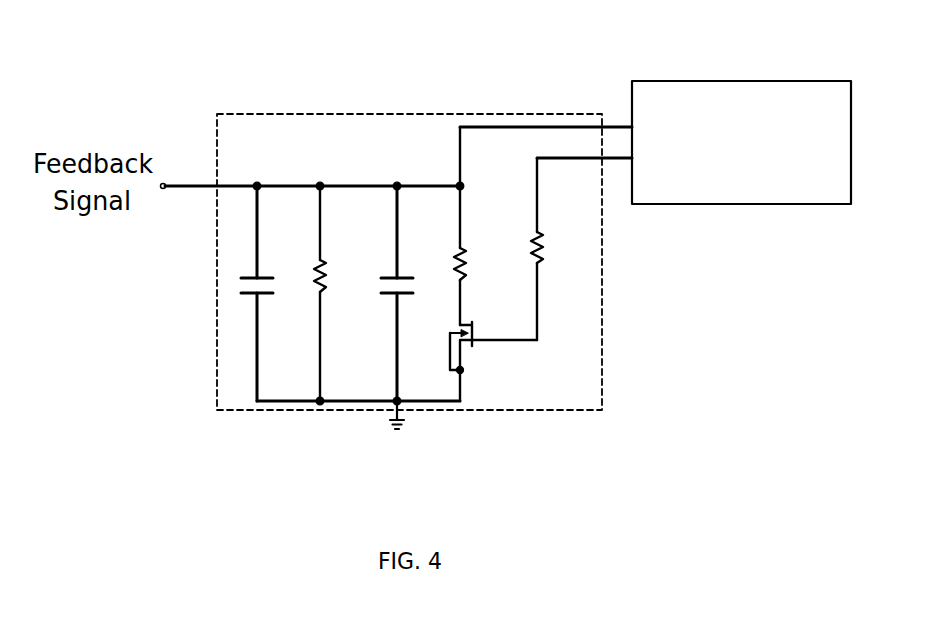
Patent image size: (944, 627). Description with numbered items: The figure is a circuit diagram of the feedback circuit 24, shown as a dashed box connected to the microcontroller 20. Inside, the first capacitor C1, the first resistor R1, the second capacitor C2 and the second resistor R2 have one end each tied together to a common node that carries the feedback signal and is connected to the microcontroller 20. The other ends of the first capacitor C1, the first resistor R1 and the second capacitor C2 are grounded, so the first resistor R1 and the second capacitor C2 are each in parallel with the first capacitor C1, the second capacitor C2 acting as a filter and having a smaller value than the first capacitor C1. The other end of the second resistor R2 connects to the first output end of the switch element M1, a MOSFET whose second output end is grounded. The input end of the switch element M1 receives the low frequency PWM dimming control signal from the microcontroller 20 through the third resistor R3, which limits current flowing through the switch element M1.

The microcontroller 20 is at (683, 81).
The feedback circuit 24 is at (257, 111).
The first capacitor C1 is at (270, 293).
The first resistor R1 is at (342, 293).
The second capacitor C2 is at (411, 293).
The second resistor R2 is at (482, 226).
The third resistor R3 is at (560, 249).
The switch element M1 is at (493, 361).